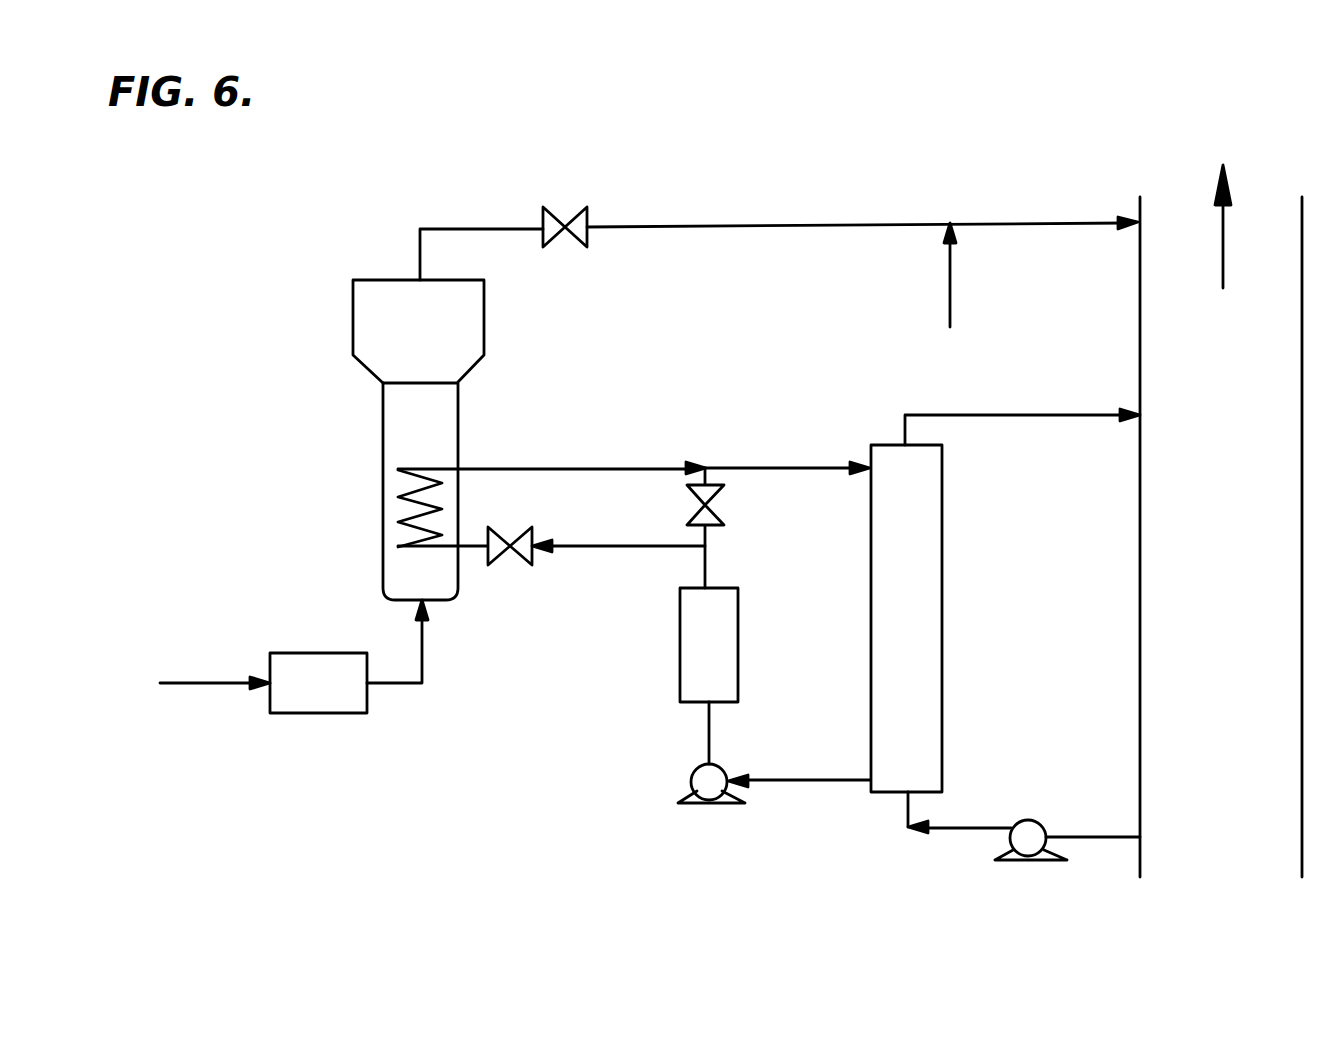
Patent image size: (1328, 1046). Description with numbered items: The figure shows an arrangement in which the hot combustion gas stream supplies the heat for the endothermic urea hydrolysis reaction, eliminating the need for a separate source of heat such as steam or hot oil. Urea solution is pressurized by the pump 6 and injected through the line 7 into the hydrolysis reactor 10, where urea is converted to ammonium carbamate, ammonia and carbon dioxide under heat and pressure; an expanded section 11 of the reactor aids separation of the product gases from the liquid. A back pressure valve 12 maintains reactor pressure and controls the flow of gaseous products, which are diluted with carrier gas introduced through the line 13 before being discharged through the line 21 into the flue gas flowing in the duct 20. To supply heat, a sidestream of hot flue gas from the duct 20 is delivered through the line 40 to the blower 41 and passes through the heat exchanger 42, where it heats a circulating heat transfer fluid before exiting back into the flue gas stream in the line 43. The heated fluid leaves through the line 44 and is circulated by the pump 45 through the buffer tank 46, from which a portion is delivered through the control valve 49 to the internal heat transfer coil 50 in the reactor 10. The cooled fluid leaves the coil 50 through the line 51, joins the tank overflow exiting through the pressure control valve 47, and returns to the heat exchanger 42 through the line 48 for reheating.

The pump 6 is at (320, 685).
The line 7 is at (422, 657).
The hydrolysis reactor 10 is at (370, 543).
The expanded section 11 is at (448, 414).
The back pressure valve 12 is at (572, 207).
The line 13 is at (948, 293).
The duct 20 is at (1221, 521).
The outlet line 21 is at (1027, 221).
The line 40 is at (1098, 838).
The blower 41 is at (1028, 850).
The heat exchanger 42 is at (922, 630).
The line 43 is at (1040, 415).
The line 44 is at (810, 780).
The pump 45 is at (710, 805).
The buffer tank 46 is at (722, 630).
The pressure control valve 47 is at (712, 508).
The line 48 is at (780, 466).
The control valve 49 is at (512, 562).
The internal heat transfer coil 50 is at (405, 488).
The line 51 is at (565, 468).